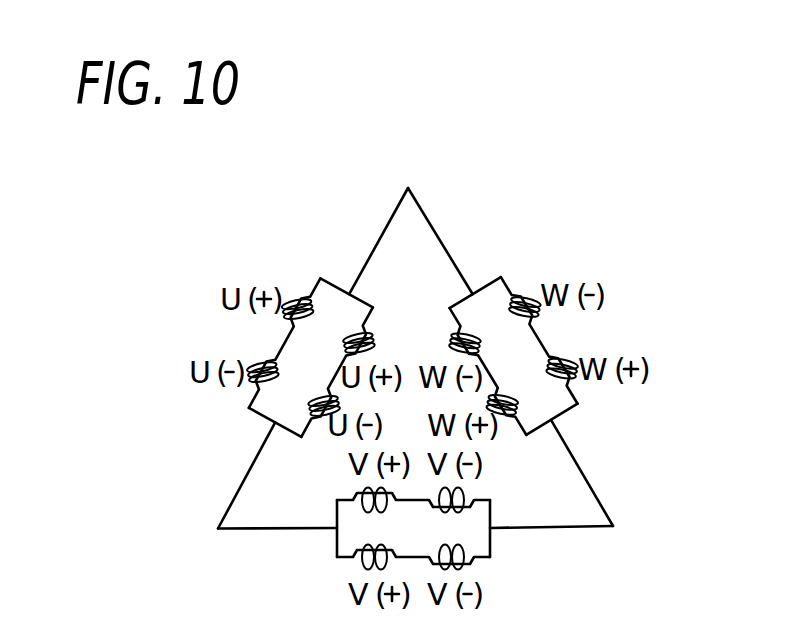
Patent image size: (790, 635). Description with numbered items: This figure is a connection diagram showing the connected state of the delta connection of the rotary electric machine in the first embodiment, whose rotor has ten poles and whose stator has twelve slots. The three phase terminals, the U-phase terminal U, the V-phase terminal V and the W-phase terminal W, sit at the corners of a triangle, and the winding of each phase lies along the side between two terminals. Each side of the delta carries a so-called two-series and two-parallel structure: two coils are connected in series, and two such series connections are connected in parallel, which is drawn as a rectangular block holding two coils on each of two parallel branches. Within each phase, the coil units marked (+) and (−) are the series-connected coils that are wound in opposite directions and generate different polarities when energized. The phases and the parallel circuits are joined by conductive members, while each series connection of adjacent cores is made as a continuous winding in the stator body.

The U-phase U is at (408, 188).
The V-phase V is at (218, 528).
The W-phase W is at (613, 526).